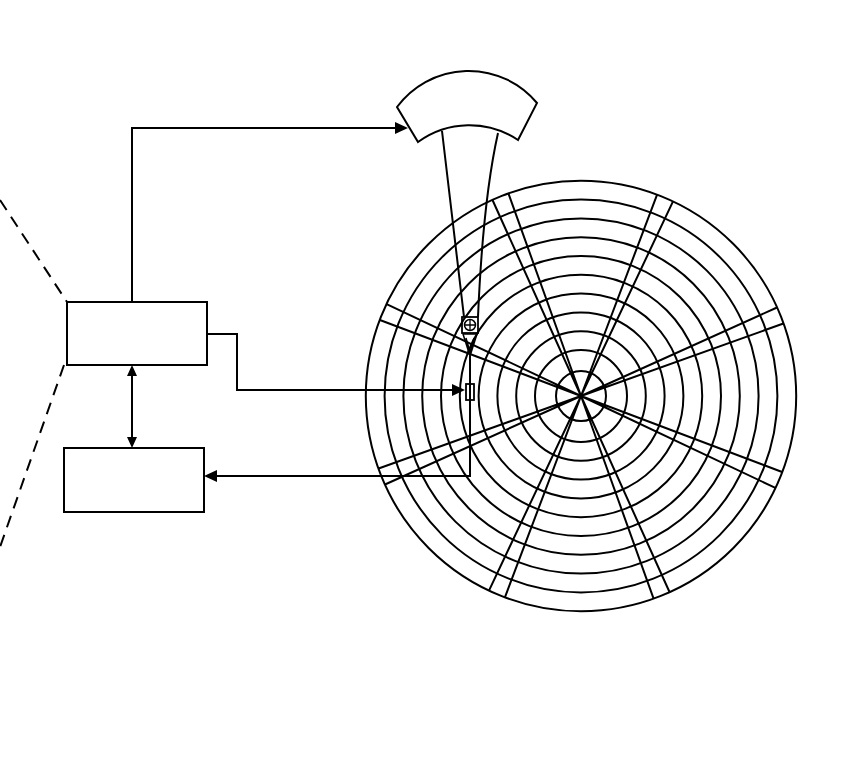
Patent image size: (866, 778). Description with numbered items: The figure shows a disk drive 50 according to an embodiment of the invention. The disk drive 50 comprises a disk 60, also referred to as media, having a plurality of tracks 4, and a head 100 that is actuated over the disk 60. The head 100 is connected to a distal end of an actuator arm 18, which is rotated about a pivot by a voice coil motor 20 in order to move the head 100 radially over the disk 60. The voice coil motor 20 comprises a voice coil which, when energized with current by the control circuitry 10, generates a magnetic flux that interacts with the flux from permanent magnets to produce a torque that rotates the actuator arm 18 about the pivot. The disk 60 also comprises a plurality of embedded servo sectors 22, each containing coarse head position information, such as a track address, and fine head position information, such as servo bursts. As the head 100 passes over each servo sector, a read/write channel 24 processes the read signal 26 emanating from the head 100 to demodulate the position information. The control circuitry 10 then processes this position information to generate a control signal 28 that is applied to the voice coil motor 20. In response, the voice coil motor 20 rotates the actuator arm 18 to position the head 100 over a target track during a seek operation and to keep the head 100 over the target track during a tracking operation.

The disk drive 50 is at (466, 42).
The tracks 4 is at (587, 389).
The disk 60 is at (727, 229).
The embedded servo sectors 22 is at (665, 203).
The actuator arm 18 is at (448, 212).
The voice coil motor 20 is at (413, 138).
The control circuitry 10 is at (172, 301).
The read/write channel 24 is at (128, 513).
The control signal 28 is at (130, 202).
The read signal 26 is at (297, 479).
The head 100 is at (462, 400).